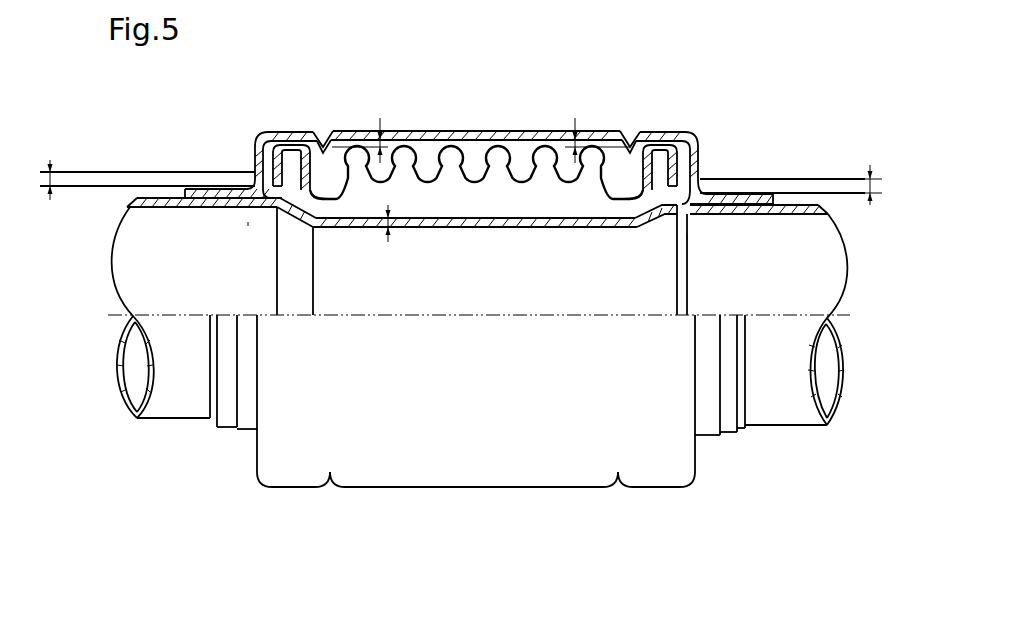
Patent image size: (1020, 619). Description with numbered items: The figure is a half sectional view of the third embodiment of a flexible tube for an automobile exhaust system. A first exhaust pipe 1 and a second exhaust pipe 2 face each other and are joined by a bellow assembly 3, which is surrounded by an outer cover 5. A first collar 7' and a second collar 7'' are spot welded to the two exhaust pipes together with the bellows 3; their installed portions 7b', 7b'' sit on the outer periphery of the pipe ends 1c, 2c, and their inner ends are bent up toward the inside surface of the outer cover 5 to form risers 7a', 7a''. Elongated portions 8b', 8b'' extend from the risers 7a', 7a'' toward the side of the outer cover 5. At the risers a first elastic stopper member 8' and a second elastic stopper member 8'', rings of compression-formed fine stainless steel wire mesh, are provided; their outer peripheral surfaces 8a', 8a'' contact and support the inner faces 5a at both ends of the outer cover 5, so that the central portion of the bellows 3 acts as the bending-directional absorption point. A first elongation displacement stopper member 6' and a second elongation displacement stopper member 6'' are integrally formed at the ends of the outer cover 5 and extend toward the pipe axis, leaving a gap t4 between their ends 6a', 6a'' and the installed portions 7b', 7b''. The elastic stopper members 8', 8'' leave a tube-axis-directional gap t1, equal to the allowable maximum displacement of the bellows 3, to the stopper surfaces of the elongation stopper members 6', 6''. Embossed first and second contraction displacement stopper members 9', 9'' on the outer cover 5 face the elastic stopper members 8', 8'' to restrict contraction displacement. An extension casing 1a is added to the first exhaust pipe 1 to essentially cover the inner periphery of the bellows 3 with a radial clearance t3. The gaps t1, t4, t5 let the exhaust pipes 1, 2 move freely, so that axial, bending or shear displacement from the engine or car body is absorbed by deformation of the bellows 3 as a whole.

The first exhaust pipe 1 is at (163, 191).
The second exhaust pipe 2 is at (782, 200).
The bellow assembly 3 is at (462, 198).
The outer cover 5 is at (479, 131).
The inner faces of the outer cover 5a is at (262, 140).
The first elongation displacement stopper member 6' is at (239, 155).
The second elongation displacement stopper member 6'' is at (714, 160).
The end of first elongation displacement stopper member 6a' is at (232, 215).
The end of second elongation displacement stopper member 6a'' is at (731, 225).
The first collar 7' is at (267, 225).
The second collar 7'' is at (708, 229).
The riser of first collar 7a' is at (314, 209).
The riser of second collar 7a'' is at (642, 215).
The installed portion of first collar 7b' is at (203, 219).
The installed portion of second collar 7b'' is at (759, 230).
The first elastic stopper member 8' is at (281, 135).
The second elastic stopper member 8'' is at (679, 135).
The outer peripheral surface of first elastic stopper member 8a' is at (299, 137).
The outer peripheral surface of second elastic stopper member 8a'' is at (647, 137).
The elongated portion 8b' is at (343, 123).
The elongated portion 8b'' is at (603, 107).
The first contraction displacement stopper member 9' is at (342, 193).
The second contraction displacement stopper member 9'' is at (614, 195).
The extension casing 1a is at (498, 225).
The end of first exhaust pipe 1c is at (278, 208).
The end of second exhaust pipe 2c is at (672, 232).
The tube-axis-directional gap t1 is at (248, 222).
The radial clearance t3 is at (392, 225).
The gap t4 is at (382, 140).
The gap t5 is at (52, 190).